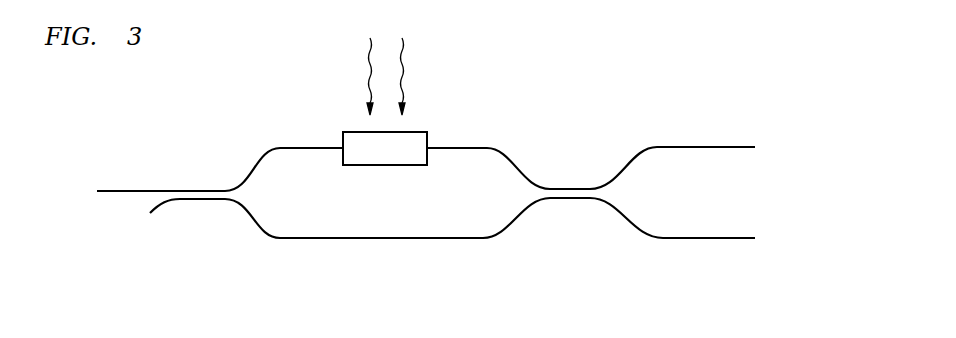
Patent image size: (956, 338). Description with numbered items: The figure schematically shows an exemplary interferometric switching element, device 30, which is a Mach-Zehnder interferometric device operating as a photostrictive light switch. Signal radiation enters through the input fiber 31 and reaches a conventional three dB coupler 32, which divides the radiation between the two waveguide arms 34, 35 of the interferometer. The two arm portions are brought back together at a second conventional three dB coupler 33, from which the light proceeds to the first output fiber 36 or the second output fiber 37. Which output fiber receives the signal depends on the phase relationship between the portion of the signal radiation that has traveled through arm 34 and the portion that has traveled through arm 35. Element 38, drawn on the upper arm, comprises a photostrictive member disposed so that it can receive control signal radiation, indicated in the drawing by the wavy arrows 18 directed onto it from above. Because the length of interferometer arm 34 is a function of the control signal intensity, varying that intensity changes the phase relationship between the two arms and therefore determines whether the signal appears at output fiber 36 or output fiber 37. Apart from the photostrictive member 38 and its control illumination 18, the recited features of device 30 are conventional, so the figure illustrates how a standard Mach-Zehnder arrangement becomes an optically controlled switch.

The light / radiation 18 is at (368, 78).
The device 30 is at (516, 115).
The input fiber 31 is at (178, 190).
The 3 dB coupler 32 is at (207, 198).
The 3 dB coupler 33 is at (557, 188).
The waveguide arm 34 is at (317, 149).
The waveguide arm 35 is at (398, 240).
The first output fiber 36 is at (718, 146).
The second output fiber 37 is at (693, 237).
The photostrictive member 38 is at (382, 166).